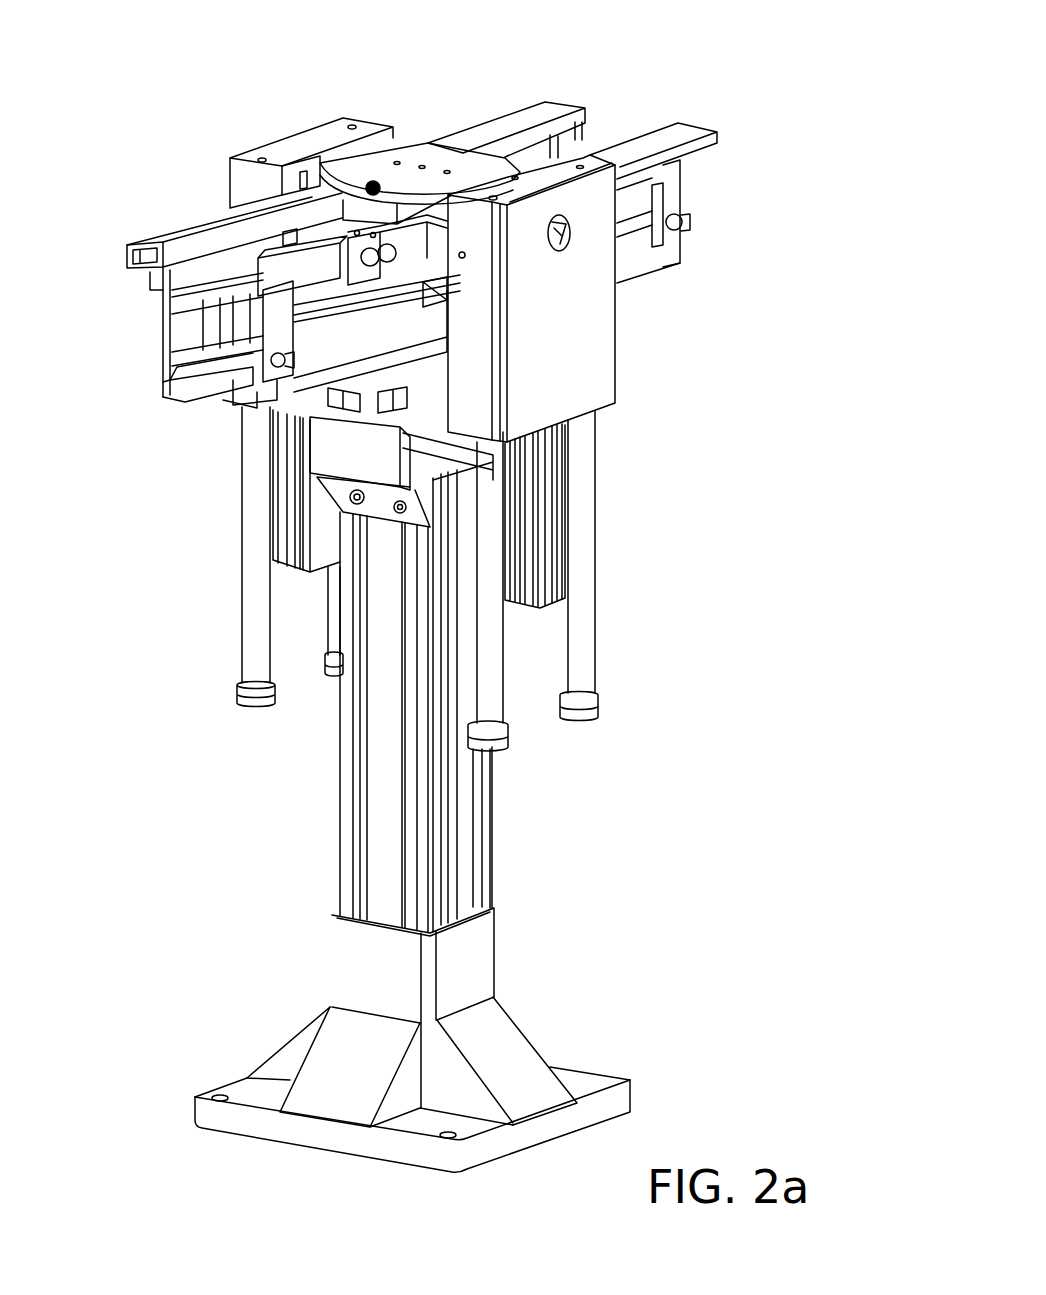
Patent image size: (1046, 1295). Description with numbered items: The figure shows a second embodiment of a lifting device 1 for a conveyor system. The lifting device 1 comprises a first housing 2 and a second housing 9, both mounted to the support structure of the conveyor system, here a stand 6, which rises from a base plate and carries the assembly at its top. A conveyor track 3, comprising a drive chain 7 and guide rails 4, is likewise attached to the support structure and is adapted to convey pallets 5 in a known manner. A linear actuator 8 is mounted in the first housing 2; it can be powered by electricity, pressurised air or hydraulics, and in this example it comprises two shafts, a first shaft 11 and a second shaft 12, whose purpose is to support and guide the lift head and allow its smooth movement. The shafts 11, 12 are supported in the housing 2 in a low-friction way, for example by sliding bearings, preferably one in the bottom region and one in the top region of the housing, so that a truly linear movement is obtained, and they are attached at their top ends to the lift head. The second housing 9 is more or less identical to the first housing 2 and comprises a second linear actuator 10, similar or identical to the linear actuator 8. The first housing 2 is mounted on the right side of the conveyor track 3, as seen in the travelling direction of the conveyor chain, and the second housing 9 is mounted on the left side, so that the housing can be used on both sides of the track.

The lifting device 1 is at (124, 78).
The housing 2 is at (598, 362).
The conveyor track 3 is at (178, 318).
The guide rails 4 is at (202, 231).
The pallets 5 is at (410, 145).
The stand 6 is at (462, 825).
The drive chain 7 is at (176, 244).
The linear actuator 8 is at (636, 572).
The second housing 9 is at (240, 180).
The second linear actuator 10 is at (204, 635).
The first shaft 11 is at (493, 677).
The second shaft 12 is at (585, 635).